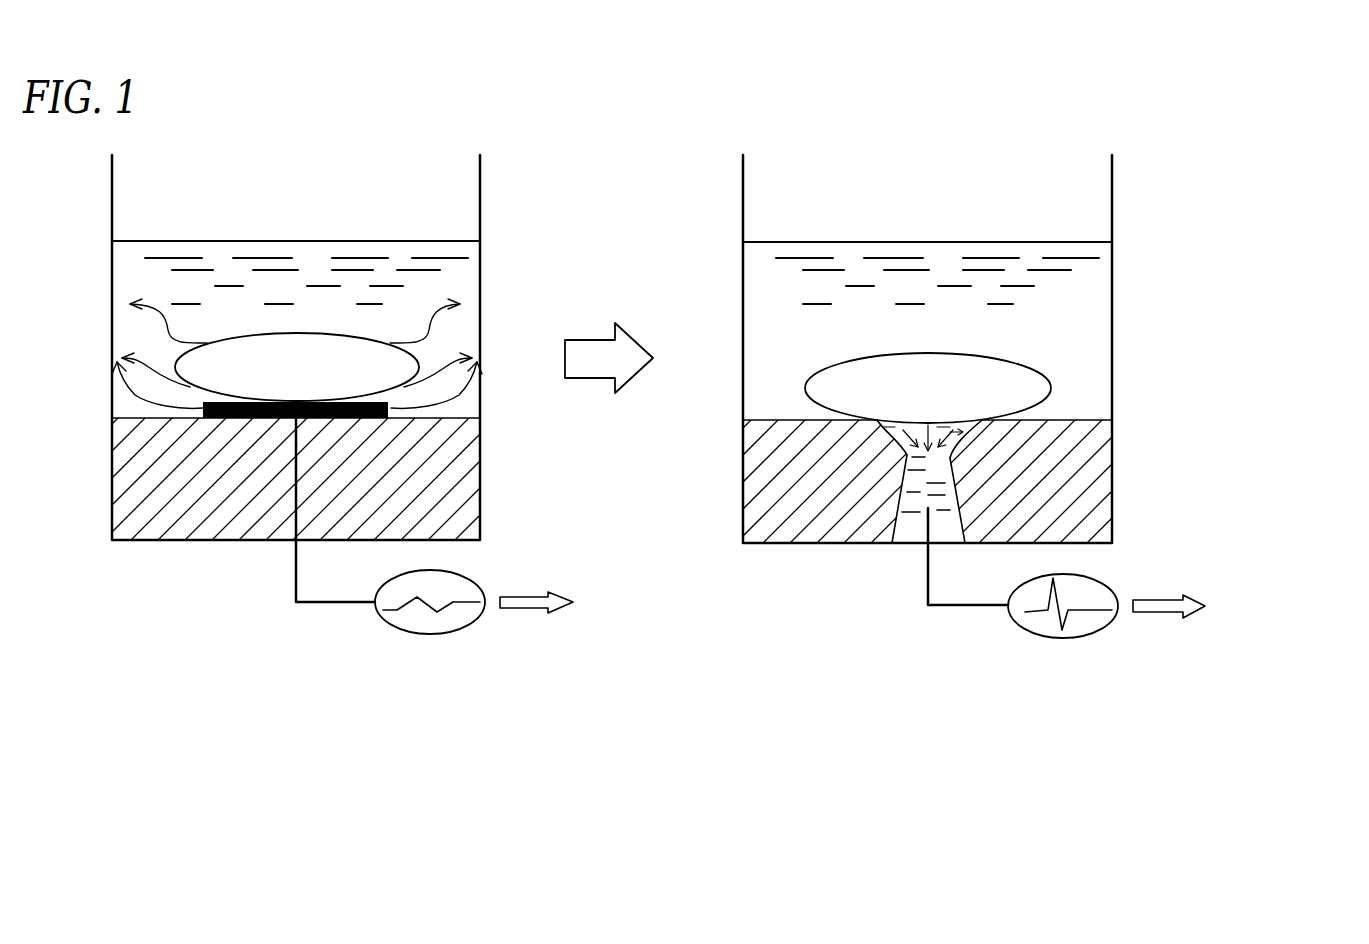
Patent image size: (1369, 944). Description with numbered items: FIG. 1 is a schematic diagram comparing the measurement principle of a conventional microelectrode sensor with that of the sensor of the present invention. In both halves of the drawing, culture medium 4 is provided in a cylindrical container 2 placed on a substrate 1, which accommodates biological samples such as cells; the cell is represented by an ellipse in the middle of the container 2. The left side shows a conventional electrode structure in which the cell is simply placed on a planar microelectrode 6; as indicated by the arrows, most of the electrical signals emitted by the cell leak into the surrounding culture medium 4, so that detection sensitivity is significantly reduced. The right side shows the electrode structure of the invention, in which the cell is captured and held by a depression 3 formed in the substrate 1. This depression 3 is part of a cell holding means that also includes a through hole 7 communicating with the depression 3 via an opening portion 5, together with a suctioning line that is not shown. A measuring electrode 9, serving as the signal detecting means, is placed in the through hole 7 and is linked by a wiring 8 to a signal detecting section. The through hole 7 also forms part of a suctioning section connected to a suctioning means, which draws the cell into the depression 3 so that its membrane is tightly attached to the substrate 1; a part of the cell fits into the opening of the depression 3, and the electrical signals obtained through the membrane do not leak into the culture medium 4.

The substrate 1 is at (145, 518).
The cylindrical container 2 is at (110, 195).
The depression 3 is at (967, 430).
The culture medium 4 is at (133, 278).
The opening portion 5 is at (953, 467).
The planar microelectrode 6 is at (217, 420).
The through hole 7 is at (930, 533).
The wiring 8 is at (538, 602).
The measuring electrode 9 is at (927, 580).